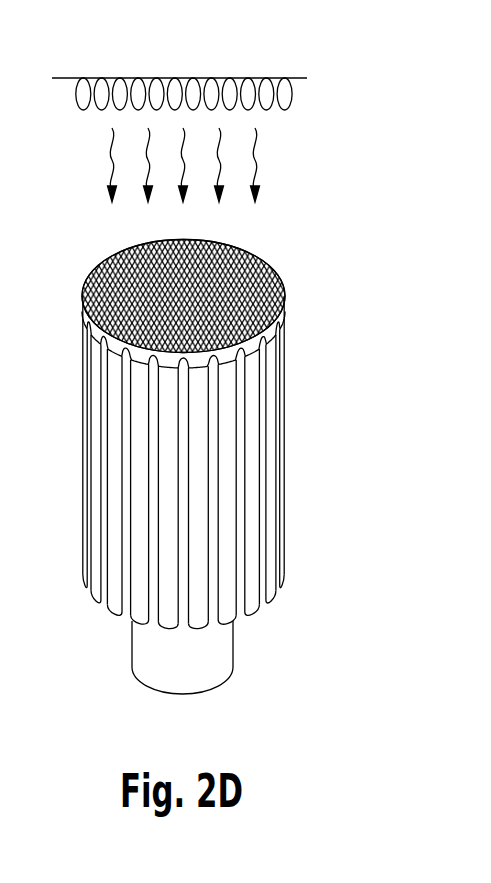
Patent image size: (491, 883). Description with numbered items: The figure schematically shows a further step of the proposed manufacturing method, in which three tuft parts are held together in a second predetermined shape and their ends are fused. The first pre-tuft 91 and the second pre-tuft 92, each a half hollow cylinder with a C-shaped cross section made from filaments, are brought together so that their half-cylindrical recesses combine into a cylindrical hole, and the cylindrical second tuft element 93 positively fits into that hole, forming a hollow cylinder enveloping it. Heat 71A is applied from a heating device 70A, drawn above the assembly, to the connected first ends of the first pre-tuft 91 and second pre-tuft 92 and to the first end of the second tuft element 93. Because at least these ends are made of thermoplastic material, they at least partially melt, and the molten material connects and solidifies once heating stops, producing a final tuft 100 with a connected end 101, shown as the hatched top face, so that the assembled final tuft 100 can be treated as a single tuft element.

The heating device 70A is at (183, 78).
The heat 71A is at (111, 152).
The second tuft element 93 is at (168, 284).
The connected end 101 is at (229, 286).
The first pre-tuft 91 is at (113, 447).
The second pre-tuft 92 is at (227, 437).
The final tuft 100 is at (185, 461).